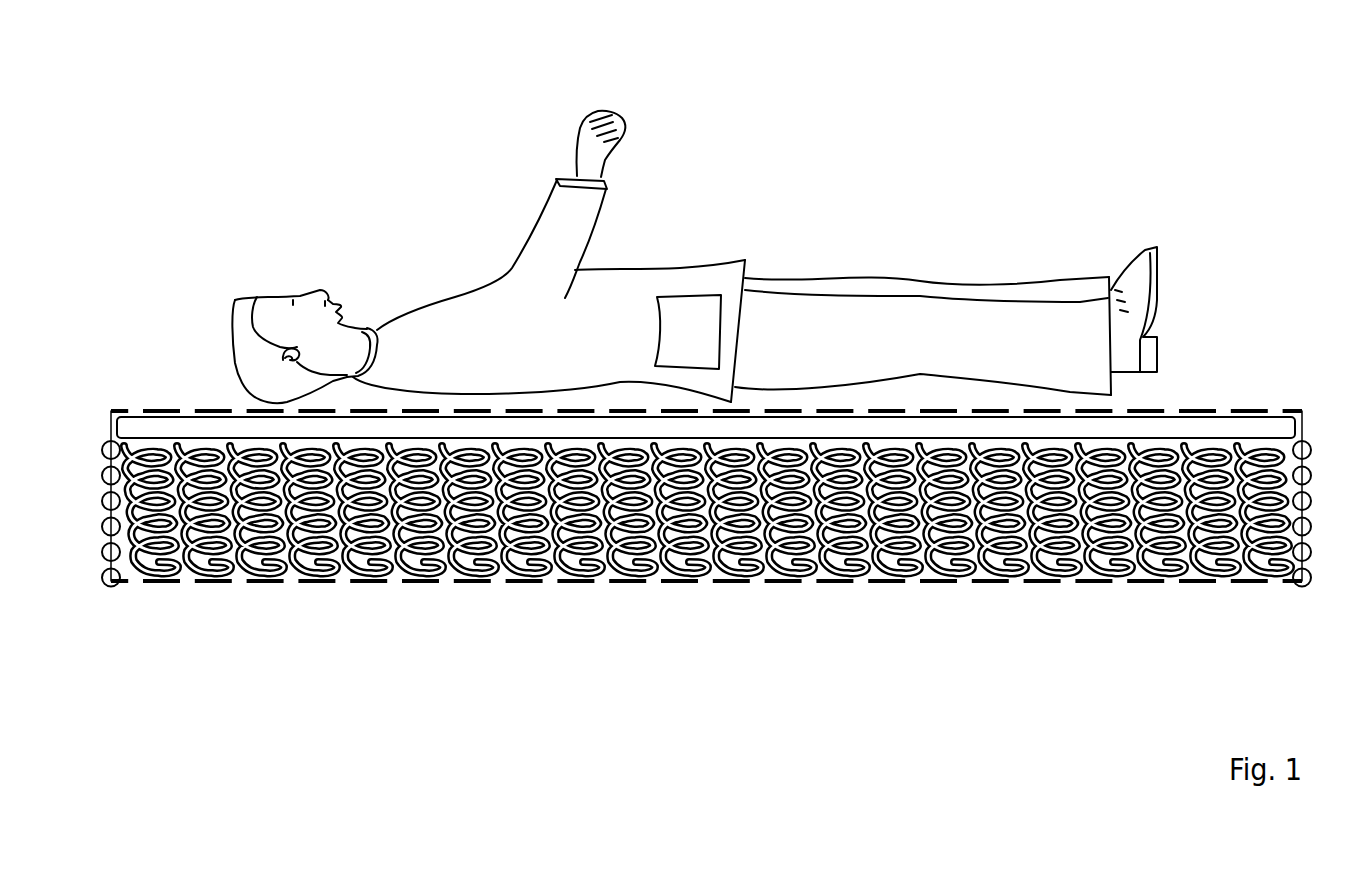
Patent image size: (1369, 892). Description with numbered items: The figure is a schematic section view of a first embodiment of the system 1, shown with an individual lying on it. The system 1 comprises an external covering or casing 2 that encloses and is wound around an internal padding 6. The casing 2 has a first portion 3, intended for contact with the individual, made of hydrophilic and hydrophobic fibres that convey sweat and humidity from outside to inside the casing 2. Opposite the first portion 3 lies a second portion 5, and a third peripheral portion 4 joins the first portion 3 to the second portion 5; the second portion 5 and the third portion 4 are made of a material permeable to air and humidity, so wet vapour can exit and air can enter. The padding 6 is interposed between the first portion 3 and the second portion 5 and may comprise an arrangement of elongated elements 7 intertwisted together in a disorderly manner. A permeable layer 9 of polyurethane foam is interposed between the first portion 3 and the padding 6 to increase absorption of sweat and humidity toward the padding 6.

The system 1 is at (168, 368).
The casing 2 is at (945, 630).
The first portion 3 is at (1197, 411).
The third peripheral portion 4 is at (105, 528).
The second portion 5 is at (641, 581).
The internal padding 6 is at (398, 595).
The elements with an elongated shape 7 is at (142, 548).
The permeable layer 9 is at (130, 427).